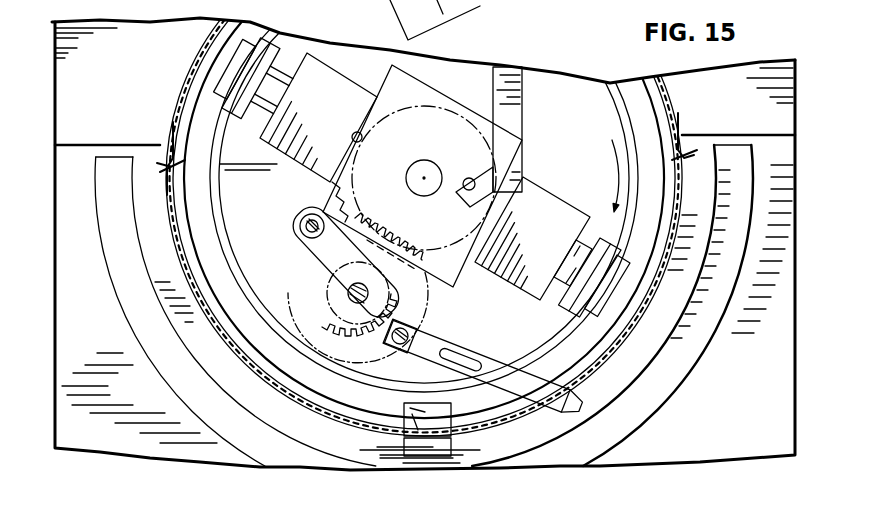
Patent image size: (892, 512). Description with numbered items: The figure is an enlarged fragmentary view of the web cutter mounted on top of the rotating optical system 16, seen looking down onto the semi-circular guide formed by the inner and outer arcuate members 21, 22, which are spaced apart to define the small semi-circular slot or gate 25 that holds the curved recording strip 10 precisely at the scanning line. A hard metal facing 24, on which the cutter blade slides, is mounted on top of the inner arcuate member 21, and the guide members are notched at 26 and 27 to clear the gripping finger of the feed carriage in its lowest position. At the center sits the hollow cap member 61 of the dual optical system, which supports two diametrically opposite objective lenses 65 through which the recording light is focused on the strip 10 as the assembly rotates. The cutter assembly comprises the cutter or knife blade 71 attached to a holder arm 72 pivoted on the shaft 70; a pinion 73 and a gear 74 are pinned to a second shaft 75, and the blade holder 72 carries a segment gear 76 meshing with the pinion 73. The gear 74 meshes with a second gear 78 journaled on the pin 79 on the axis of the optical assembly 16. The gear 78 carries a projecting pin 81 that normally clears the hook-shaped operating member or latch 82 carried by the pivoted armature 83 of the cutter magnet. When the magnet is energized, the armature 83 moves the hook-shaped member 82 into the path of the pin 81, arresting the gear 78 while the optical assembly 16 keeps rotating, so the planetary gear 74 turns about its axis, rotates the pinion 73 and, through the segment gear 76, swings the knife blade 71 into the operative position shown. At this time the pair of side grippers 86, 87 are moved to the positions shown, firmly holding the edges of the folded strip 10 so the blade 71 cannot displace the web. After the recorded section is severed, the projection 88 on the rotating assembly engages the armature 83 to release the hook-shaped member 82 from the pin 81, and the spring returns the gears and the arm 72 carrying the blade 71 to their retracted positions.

The recording strip 10 is at (227, 343).
The rotating optical system 16 is at (557, 192).
The inner arcuate member 21 is at (695, 345).
The outer arcuate member 22 is at (233, 291).
The hard metal facing 24 is at (640, 368).
The slot or gate 25 is at (203, 286).
The notch 26 is at (400, 446).
The notch 27 is at (413, 407).
The cap member 61 is at (449, 102).
The objective lens 65 is at (240, 63).
The shaft 70 is at (301, 215).
The cutter blade 71 is at (538, 352).
The holder arm 72 is at (418, 311).
The pinion 73 is at (342, 300).
The gear 74 is at (421, 253).
The second shaft 75 is at (352, 284).
The segment gear 76 is at (302, 298).
The second gear 78 is at (332, 185).
The pin 79 is at (425, 160).
The projecting pin 81 is at (468, 178).
The hook-shaped operating member 82 is at (462, 200).
The armature 83 is at (524, 99).
The side gripper 86 is at (165, 133).
The side gripper 87 is at (690, 116).
The projection 88 is at (358, 132).